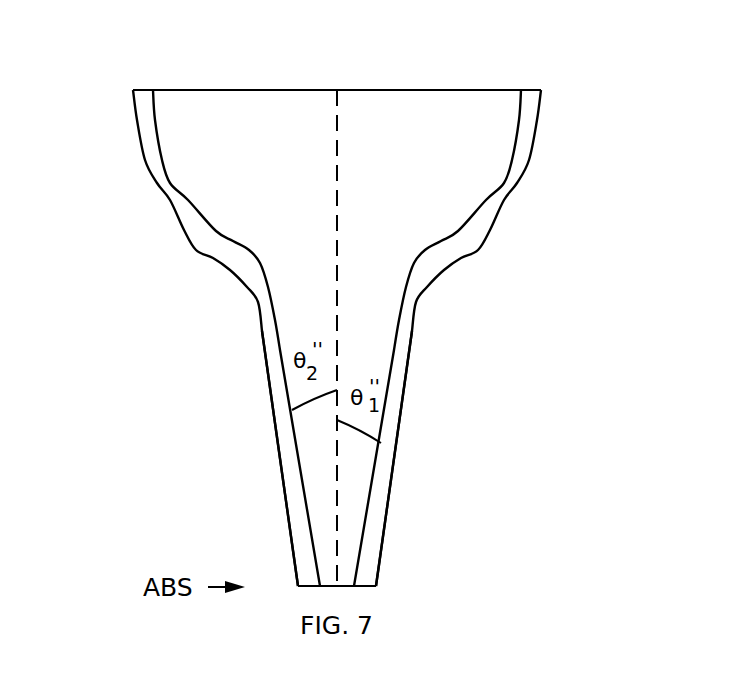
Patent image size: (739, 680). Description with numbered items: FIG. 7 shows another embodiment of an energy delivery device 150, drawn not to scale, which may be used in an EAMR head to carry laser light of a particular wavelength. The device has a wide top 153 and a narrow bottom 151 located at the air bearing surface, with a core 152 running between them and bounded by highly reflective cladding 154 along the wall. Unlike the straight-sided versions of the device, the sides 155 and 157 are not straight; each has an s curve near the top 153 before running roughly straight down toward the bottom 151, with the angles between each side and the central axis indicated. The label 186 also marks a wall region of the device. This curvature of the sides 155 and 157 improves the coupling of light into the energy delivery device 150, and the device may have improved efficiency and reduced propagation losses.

The energy delivery device 150 is at (368, 46).
The bottom 151 is at (455, 581).
The core 152 is at (190, 90).
The top 153 is at (600, 91).
The highly reflective cladding 154 is at (268, 383).
The side 155 is at (430, 292).
The side 157 is at (240, 302).
The second outer sidewall 186 is at (408, 367).